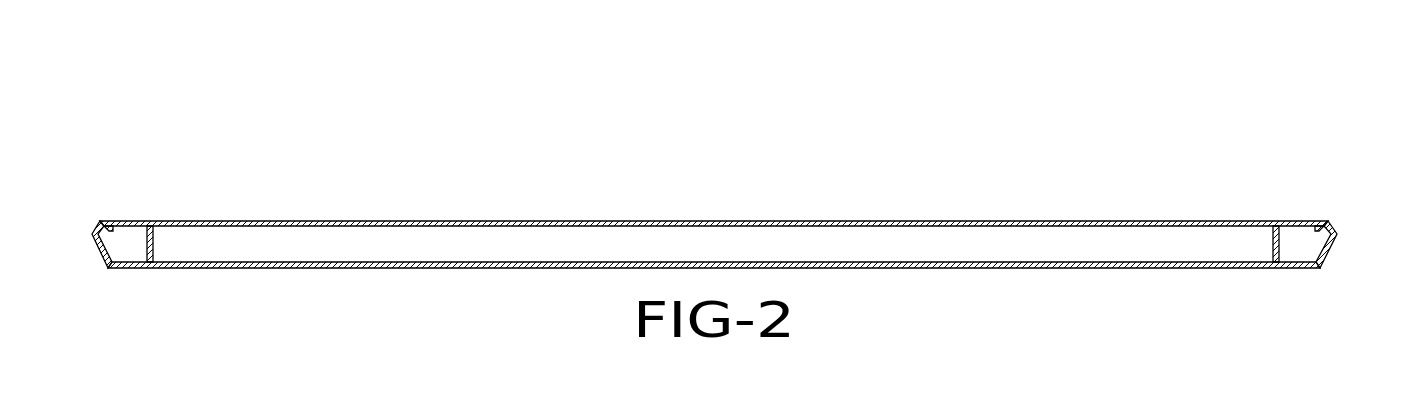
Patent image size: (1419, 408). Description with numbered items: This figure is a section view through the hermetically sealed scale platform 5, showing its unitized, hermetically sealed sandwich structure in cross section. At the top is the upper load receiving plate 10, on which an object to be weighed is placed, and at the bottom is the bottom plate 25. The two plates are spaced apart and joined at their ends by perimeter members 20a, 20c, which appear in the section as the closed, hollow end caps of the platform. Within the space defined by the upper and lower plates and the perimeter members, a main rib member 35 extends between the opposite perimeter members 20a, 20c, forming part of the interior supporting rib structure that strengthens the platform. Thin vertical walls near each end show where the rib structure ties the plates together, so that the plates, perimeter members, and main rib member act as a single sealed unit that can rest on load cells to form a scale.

The hermetically sealed scale platform 5 is at (155, 153).
The upper load receiving plate 10 is at (1048, 222).
The bottom plate 25 is at (965, 268).
The perimeter member 20a is at (1332, 248).
The perimeter member 20c is at (97, 255).
The main rib member 35 is at (220, 262).